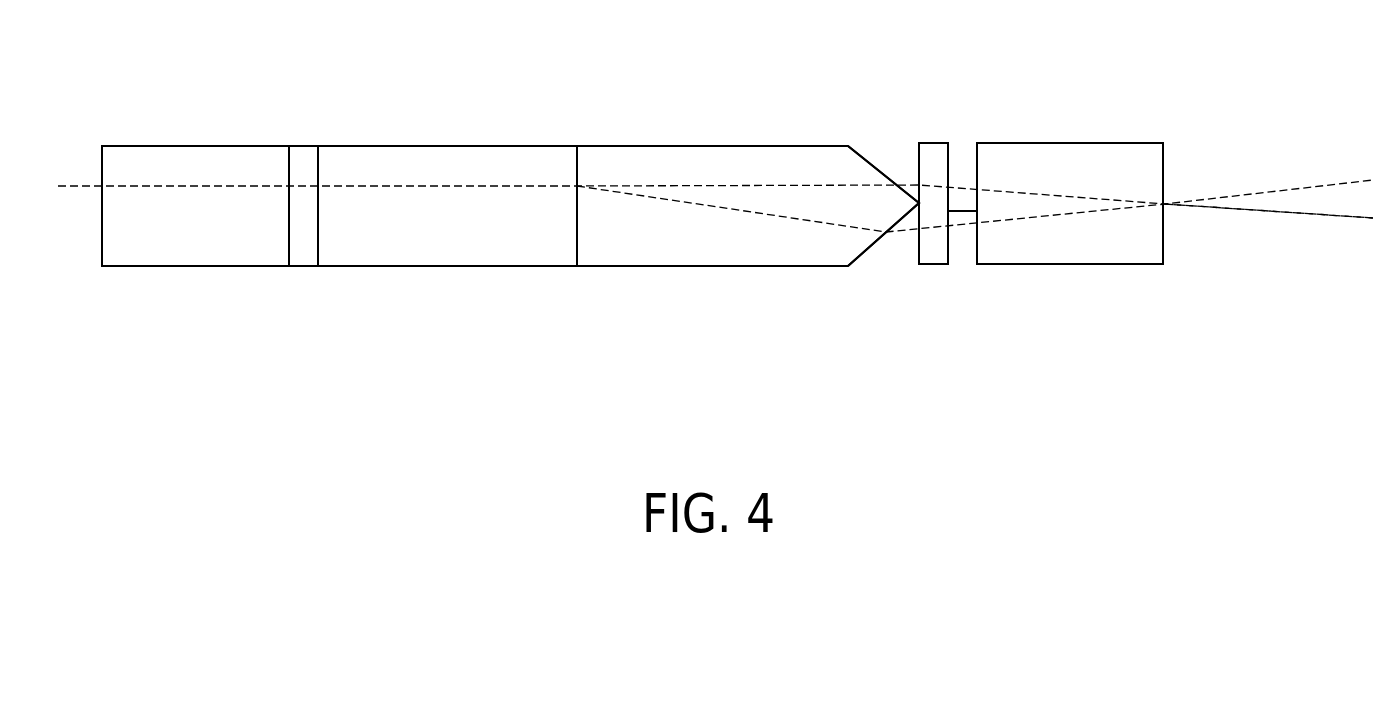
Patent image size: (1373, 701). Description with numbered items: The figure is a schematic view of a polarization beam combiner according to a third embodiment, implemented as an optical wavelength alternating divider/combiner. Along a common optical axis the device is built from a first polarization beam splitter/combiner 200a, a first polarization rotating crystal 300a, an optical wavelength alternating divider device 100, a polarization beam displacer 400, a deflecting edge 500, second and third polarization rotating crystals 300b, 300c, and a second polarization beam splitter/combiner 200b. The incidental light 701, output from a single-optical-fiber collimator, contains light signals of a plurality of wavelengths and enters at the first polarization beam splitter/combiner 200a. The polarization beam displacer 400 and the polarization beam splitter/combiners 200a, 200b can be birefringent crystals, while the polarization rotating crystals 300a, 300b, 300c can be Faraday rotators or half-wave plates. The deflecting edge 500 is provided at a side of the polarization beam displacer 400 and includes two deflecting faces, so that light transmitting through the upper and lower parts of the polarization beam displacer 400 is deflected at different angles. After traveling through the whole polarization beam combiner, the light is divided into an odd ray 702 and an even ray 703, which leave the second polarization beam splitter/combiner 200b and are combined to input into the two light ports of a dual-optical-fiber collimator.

The optical wavelength alternating divider device 100 is at (433, 146).
The first polarization beam splitter/combiner 200a is at (198, 146).
The second polarization beam splitter/combiner 200b is at (1092, 266).
The first polarization rotating crystal 300a is at (302, 268).
The second polarization rotating crystal 300b is at (935, 143).
The third polarization rotating crystal 300c is at (963, 266).
The polarization beam displacer 400 is at (700, 146).
The deflecting edge 500 is at (868, 158).
The incidental light 701 is at (72, 185).
The odd ray 702 is at (1302, 188).
The even ray 703 is at (1297, 215).